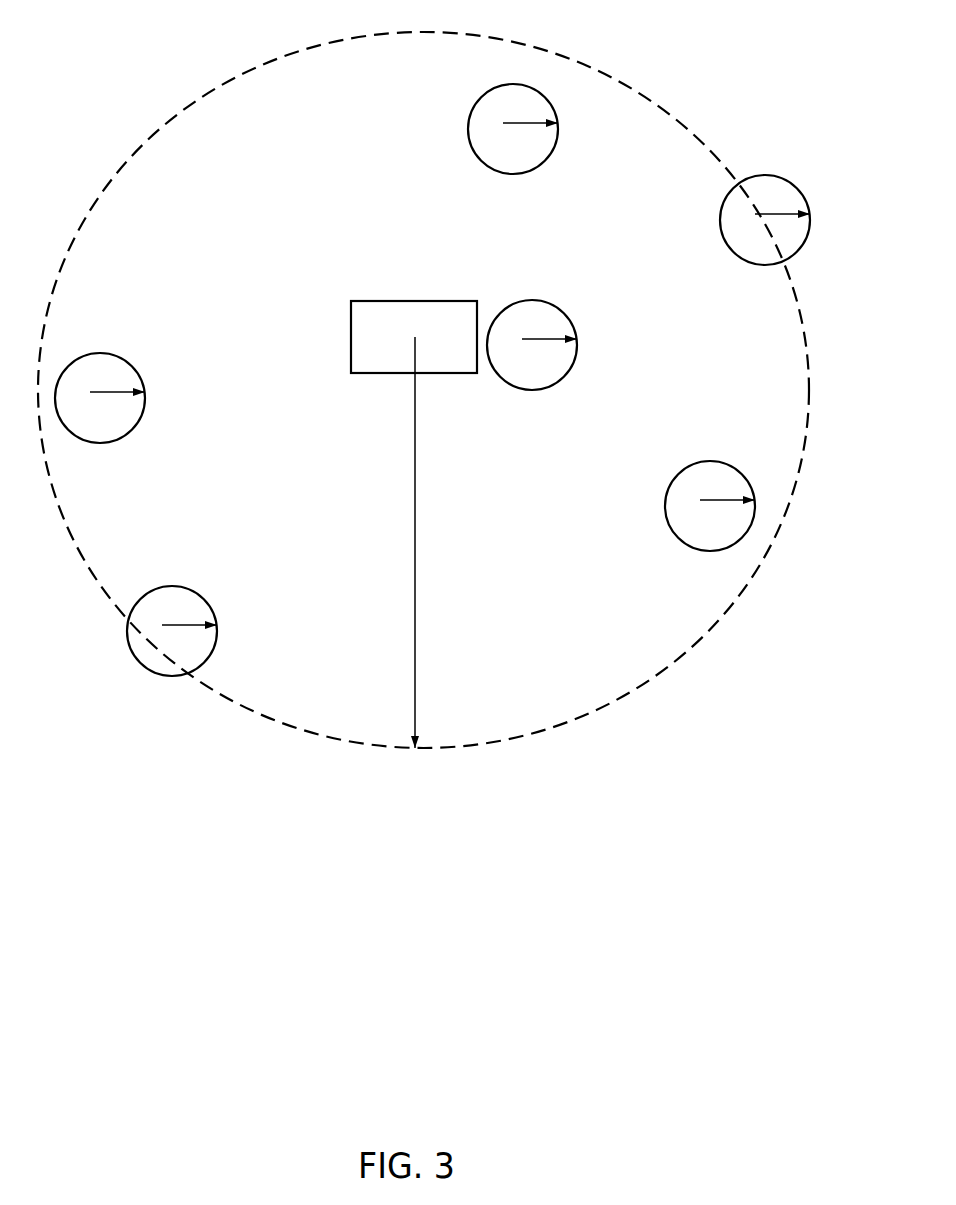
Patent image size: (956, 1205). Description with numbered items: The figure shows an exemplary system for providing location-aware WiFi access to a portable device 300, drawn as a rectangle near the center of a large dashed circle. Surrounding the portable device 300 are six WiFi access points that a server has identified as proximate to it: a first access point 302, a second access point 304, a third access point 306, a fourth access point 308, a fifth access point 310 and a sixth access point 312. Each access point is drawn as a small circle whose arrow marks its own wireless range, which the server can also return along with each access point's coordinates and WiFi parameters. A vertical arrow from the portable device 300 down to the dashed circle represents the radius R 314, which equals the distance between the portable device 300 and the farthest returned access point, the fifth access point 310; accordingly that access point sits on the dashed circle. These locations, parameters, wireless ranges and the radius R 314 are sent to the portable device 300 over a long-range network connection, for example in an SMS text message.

The portable device 300 is at (353, 281).
The access point AP1 302 is at (494, 129).
The access point AP2 304 is at (541, 330).
The access point AP3 306 is at (710, 487).
The access point AP4 308 is at (119, 412).
The access point AP5 310 is at (774, 206).
The access point AP6 312 is at (200, 631).
The radius R 314 is at (442, 542).